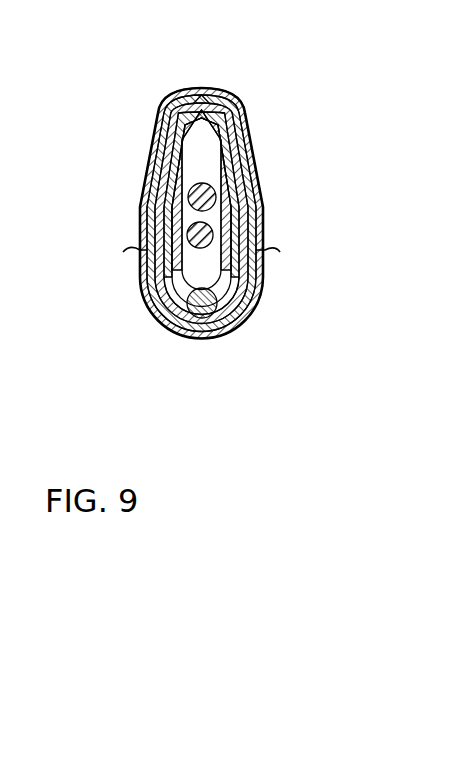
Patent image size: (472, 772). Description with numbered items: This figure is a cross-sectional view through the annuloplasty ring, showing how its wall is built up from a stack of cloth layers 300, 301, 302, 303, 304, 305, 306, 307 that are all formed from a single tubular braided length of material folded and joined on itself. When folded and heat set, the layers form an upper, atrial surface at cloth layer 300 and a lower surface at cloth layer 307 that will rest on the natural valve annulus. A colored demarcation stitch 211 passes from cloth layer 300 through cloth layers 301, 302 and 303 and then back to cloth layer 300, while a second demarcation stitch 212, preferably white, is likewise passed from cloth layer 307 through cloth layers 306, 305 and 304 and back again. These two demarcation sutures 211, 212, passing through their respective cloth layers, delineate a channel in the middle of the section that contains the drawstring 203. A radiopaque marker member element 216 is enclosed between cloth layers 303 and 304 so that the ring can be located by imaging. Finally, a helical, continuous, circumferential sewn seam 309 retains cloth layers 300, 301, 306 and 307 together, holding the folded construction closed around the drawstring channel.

The cloth layer 300 is at (163, 97).
The cloth layer 301 is at (157, 148).
The cloth layer 302 is at (152, 190).
The cloth layer 303 is at (175, 232).
The cloth layer 304 is at (255, 222).
The cloth layer 305 is at (280, 128).
The cloth layer 306 is at (250, 173).
The cloth layer 307 is at (237, 95).
The sewn seam 309 is at (202, 88).
The colored demarcation stitch 211 is at (138, 250).
The second demarcation stitch 212 is at (272, 250).
The drawstring 203 is at (255, 300).
The radiopaque marker member element 216 is at (152, 312).